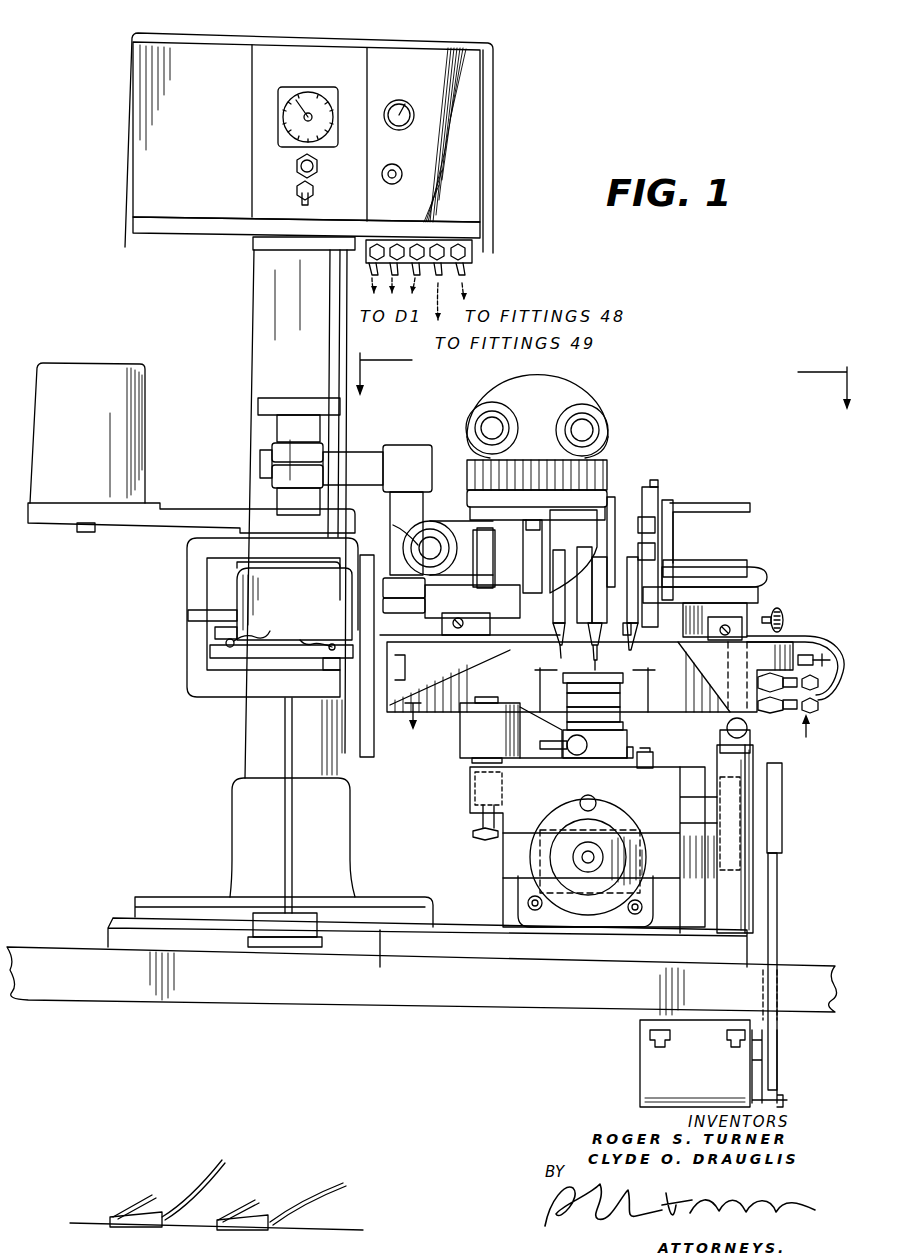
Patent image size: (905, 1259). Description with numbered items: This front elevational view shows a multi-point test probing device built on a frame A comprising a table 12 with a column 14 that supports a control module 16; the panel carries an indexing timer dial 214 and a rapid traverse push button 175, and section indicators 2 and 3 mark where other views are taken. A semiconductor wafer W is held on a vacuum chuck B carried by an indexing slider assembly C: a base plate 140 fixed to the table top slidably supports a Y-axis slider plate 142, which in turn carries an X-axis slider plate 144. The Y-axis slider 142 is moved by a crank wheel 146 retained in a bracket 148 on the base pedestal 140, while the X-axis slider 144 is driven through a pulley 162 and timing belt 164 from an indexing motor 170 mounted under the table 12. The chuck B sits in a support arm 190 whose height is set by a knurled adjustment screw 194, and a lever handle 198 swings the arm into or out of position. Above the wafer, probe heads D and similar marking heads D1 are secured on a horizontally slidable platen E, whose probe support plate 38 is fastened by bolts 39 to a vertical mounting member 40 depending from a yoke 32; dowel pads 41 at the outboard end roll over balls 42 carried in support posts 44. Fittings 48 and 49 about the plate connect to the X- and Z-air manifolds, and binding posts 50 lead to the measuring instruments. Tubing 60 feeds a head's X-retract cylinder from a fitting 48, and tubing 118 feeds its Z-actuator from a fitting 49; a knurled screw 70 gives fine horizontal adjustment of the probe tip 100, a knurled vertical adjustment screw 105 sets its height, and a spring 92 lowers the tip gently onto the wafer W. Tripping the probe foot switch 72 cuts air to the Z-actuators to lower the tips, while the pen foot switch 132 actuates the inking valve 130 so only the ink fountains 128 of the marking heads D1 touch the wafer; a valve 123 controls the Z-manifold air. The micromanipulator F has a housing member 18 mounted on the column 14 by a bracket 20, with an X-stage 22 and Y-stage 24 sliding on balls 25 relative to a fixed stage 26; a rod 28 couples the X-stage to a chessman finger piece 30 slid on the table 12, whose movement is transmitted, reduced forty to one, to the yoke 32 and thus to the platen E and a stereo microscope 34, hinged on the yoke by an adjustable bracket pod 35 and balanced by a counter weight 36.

The table 12 is at (70, 950).
The column 14 is at (235, 807).
The control module 16 is at (477, 120).
The housing member 18 is at (312, 616).
The bracket 20 is at (320, 665).
The X-stage 22 is at (193, 617).
The Y-stage 24 is at (217, 633).
The balls 25 is at (280, 634).
The fixed stage 26 is at (213, 652).
The rod 28 is at (283, 845).
The finger piece 30 is at (305, 952).
The yoke 32 is at (193, 562).
The stereo microscope 34 is at (578, 392).
The adjustable bracket pod 35 is at (417, 420).
The counter weight 36 is at (133, 412).
The probe support plate 38 is at (490, 618).
The bolts 39 is at (397, 665).
The vertical mounting member 40 is at (362, 757).
The hardened dowel pads 41 is at (730, 697).
The balls 42 is at (720, 730).
The support posts 44 is at (748, 883).
The fittings 48 is at (807, 690).
The fittings 49 is at (812, 702).
The binding posts 50 is at (808, 655).
The tubing 60 is at (790, 633).
The knurled adjustment screw 70 is at (777, 607).
The foot switch 72 is at (133, 1208).
The spring 92 is at (693, 530).
The probe tip 100 is at (620, 645).
The knurled vertical adjustment screw 105 is at (655, 483).
The tubing 118 is at (840, 657).
The valve 123 is at (284, 1155).
The ink fountains 128 is at (558, 644).
The valve 130 is at (408, 1206).
The second foot switch 132 is at (242, 1203).
The base plate 140 is at (507, 902).
The Y-axis slider plate 142 is at (507, 867).
The X-axis slider plate 144 is at (607, 793).
The crank wheel 146 is at (594, 806).
The bracket 148 is at (562, 915).
The pulley 162 is at (782, 790).
The timing belt 164 is at (777, 890).
The indexing motor 170 is at (712, 1082).
The rapid traverse push button 175 is at (312, 195).
The support arm 190 is at (460, 740).
The knurled adjustment screw 194 is at (473, 832).
The lever handle 198 is at (548, 748).
The dial 214 is at (328, 90).
The section line 2 is at (602, 369).
The section line 3 is at (610, 712).
The frame A is at (243, 1010).
The vacuum chuck B is at (622, 704).
The indexing slider assembly C is at (498, 852).
The probe heads D is at (665, 490).
The ink markers D1 is at (618, 498).
The platen E is at (462, 656).
The micromanipulator F is at (278, 743).
The semiconductor wafer W is at (612, 674).